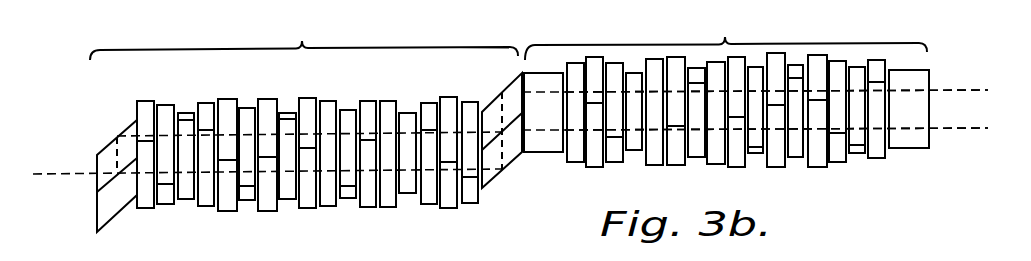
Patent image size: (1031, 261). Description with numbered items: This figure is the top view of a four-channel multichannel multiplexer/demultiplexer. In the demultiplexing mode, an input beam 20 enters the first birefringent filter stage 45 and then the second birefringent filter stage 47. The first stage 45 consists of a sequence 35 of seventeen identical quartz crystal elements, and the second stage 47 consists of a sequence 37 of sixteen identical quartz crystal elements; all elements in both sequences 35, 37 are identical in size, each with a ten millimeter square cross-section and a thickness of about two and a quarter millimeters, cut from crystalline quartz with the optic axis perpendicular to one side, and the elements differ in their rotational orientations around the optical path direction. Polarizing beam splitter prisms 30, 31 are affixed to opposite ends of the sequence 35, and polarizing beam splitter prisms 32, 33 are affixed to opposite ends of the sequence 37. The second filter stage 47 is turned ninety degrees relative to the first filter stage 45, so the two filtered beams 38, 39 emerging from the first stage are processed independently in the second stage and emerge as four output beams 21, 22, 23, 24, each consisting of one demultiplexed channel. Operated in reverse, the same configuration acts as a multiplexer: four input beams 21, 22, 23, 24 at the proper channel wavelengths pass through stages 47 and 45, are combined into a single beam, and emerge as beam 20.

The beam 20 is at (42, 172).
The output beam 21 is at (955, 90).
The output beam 22 is at (776, 91).
The output beam 23 is at (950, 128).
The output beam 24 is at (776, 129).
The polarizing beam splitter prism 30 is at (97, 207).
The polarizing beam splitter prism 31 is at (495, 107).
The polarizing beam splitter prism 32 is at (553, 153).
The polarizing beam splitter prism 33 is at (911, 148).
The sequence of crystal elements 35 is at (302, 208).
The sequence of crystal elements 37 is at (673, 165).
The filtered beam 38 is at (527, 93).
The filtered beam 39 is at (526, 132).
The first birefringent filter stage 45 is at (304, 39).
The second birefringent filter stage 47 is at (726, 37).